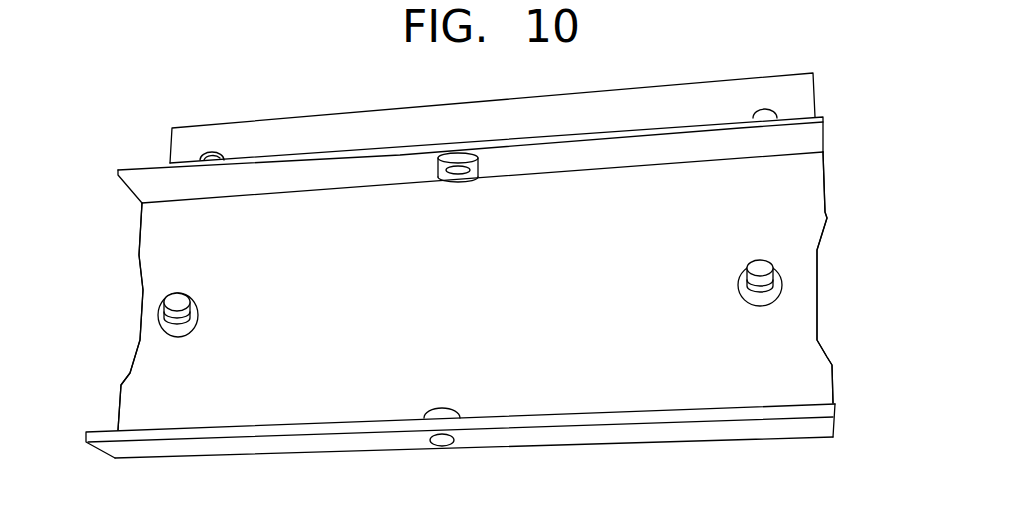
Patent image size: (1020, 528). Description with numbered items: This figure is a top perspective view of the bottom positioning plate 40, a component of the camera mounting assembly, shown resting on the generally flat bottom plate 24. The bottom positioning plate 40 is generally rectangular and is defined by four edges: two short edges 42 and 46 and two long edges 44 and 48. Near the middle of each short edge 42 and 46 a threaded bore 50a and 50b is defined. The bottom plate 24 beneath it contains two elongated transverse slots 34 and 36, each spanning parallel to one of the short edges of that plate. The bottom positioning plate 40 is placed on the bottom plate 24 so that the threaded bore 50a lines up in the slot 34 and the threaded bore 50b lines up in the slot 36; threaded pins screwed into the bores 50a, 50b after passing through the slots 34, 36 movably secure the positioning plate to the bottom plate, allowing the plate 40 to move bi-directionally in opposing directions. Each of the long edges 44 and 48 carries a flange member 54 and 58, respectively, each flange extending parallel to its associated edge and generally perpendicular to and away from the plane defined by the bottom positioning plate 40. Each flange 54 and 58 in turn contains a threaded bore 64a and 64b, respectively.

The bottom plate 24 is at (285, 140).
The slot 34 is at (215, 153).
The slot 36 is at (784, 100).
The bottom positioning plate 40 is at (658, 377).
The short edge 42 is at (138, 252).
The long edge 44 is at (565, 175).
The short edge 46 is at (828, 212).
The long edge 48 is at (333, 455).
The threaded bore 50a is at (193, 318).
The threaded bore 50b is at (742, 290).
The flange member 54 is at (338, 173).
The flange member 58 is at (293, 443).
The threaded bore 64a is at (462, 182).
The threaded bore 64b is at (445, 412).